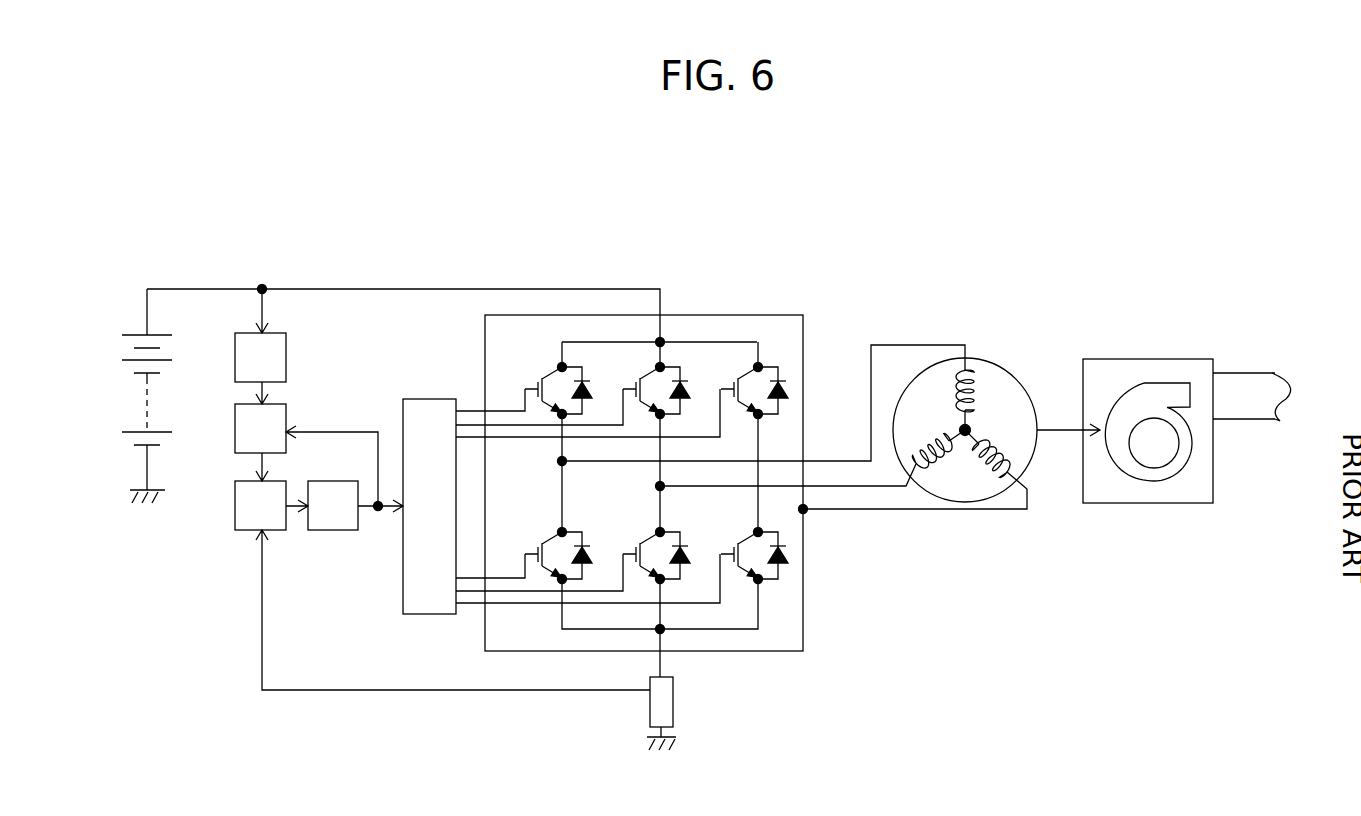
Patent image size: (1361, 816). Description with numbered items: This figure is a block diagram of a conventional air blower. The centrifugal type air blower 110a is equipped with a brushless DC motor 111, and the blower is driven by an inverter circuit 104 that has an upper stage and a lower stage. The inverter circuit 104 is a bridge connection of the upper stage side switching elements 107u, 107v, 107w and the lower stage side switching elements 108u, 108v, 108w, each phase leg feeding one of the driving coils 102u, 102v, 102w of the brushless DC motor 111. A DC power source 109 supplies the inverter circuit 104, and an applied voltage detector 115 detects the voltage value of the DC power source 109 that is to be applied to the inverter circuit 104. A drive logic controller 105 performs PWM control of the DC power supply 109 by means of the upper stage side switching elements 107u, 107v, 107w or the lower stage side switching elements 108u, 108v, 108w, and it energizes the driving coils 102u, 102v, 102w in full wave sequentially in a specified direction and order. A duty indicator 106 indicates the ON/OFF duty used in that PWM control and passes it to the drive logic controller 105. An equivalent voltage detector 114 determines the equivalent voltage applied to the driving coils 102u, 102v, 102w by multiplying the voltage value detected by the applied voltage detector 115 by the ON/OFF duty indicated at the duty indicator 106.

The DC power source 109 is at (125, 398).
The applied voltage detector 115 is at (288, 360).
The equivalent voltage detector 114 is at (235, 430).
The duty indicator 106 is at (343, 532).
The drive logic controller 105 is at (405, 578).
The inverter circuit 104 is at (692, 498).
The upper stage side switching element 107u is at (543, 383).
The upper stage side switching element 107v is at (641, 383).
The upper stage side switching element 107w is at (735, 383).
The lower stage side switching element 108u is at (541, 550).
The lower stage side switching element 108v is at (641, 548).
The lower stage side switching element 108w is at (735, 548).
The driving coil 102u is at (952, 390).
The driving coil 102v is at (947, 475).
The driving coil 102w is at (997, 475).
The brushless DC motor 111 is at (946, 433).
The centrifugal type air blower 110a is at (1148, 383).